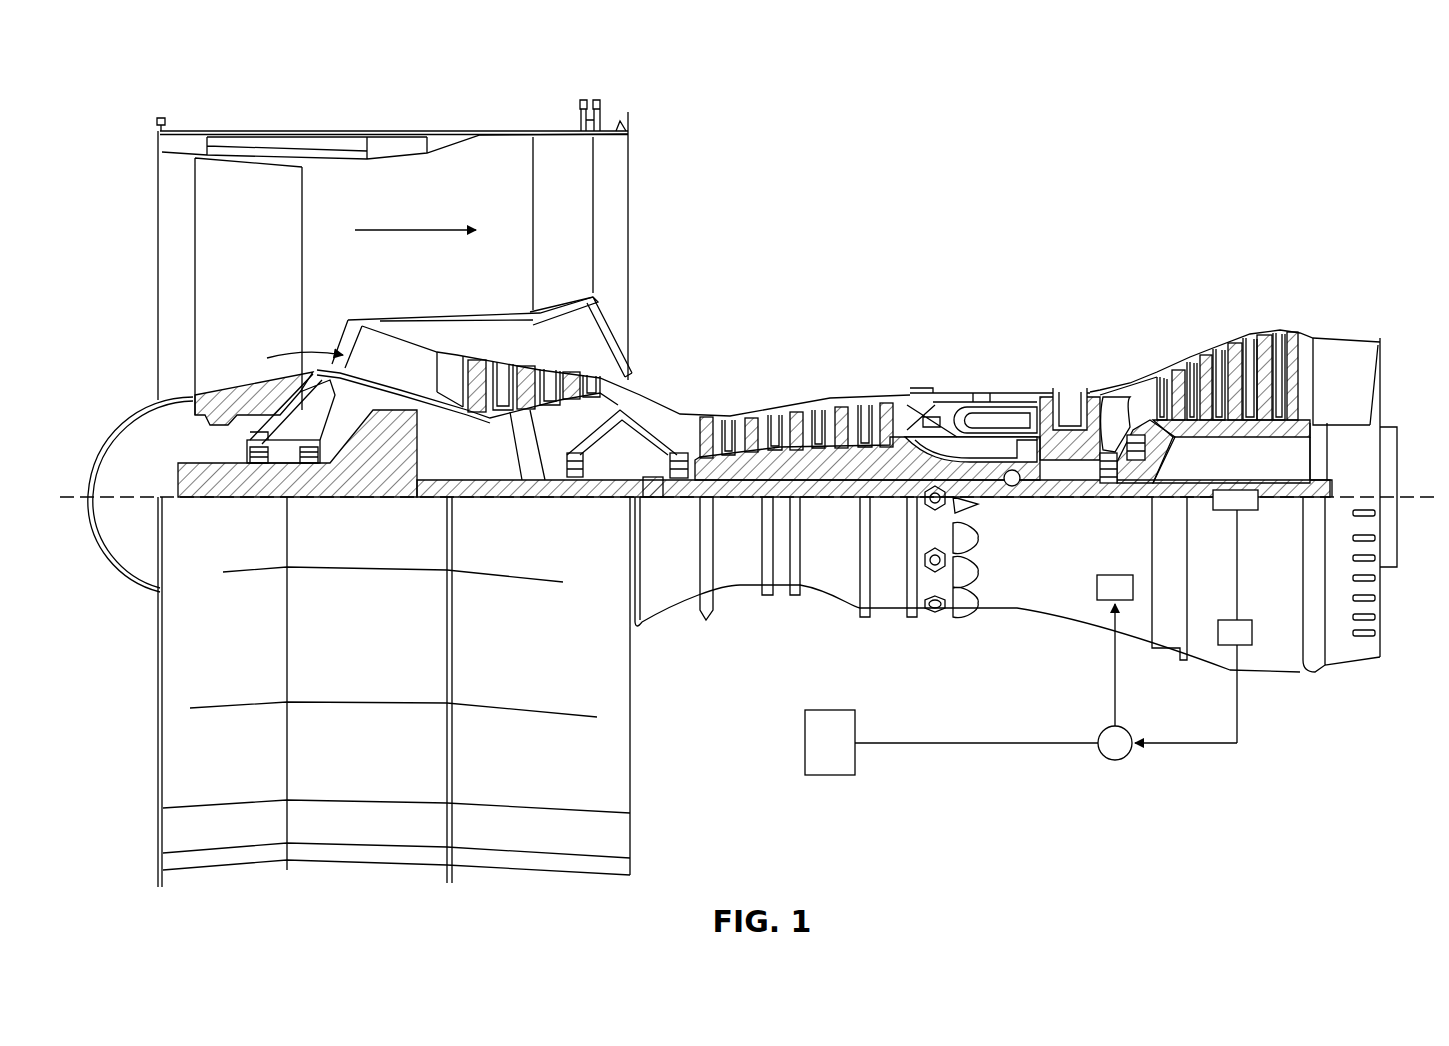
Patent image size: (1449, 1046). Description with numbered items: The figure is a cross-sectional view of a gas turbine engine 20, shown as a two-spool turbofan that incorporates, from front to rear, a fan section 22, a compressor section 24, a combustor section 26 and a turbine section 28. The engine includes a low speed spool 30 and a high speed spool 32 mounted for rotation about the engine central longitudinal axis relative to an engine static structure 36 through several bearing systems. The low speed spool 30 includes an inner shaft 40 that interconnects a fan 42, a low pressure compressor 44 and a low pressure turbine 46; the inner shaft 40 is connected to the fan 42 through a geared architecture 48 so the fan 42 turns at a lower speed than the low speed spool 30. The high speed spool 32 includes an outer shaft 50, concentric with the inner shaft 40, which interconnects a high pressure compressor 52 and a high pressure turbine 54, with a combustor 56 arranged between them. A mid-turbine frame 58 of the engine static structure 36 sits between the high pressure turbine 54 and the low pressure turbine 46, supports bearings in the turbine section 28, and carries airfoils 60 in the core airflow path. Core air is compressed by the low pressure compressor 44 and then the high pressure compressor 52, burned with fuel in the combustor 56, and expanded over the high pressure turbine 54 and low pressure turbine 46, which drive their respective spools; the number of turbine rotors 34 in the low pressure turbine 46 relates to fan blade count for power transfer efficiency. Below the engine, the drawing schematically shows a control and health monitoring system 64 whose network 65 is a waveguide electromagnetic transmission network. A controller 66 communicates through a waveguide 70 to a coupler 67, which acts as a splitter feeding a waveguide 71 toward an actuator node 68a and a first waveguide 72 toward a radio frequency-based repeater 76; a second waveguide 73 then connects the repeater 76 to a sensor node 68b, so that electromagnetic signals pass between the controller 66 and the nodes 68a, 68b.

The gas turbine engine 20 is at (1203, 163).
The fan section 22 is at (430, 117).
The compressor section 24 is at (823, 355).
The combustor section 26 is at (984, 355).
The turbine section 28 is at (1149, 286).
The low speed spool 30 is at (849, 503).
The high speed spool 32 is at (905, 437).
The turbine rotors 34 is at (1314, 440).
The engine static structure 36 is at (889, 617).
The inner shaft 40 is at (645, 493).
The fan 42 is at (240, 256).
The low pressure compressor 44 is at (545, 372).
The low pressure turbine 46 is at (1200, 354).
The geared architecture 48 is at (395, 466).
The outer shaft 50 is at (1012, 488).
The high pressure compressor 52 is at (805, 463).
The high pressure turbine 54 is at (1070, 396).
The combustor 56 is at (995, 413).
The mid-turbine frame 58 is at (1124, 382).
The airfoils 60 is at (1118, 408).
The control and health monitoring system 64 is at (1182, 777).
The network 65 is at (1292, 763).
The controller 66 is at (815, 731).
The coupler 67 is at (1118, 761).
The actuator node 68a is at (1095, 585).
The sensor node 68b is at (1247, 512).
The waveguide 70 is at (905, 745).
The waveguide 71 is at (1112, 685).
The first waveguide 72 is at (1240, 722).
The second waveguide 73 is at (1240, 597).
The radio frequency-based repeater 76 is at (1245, 648).